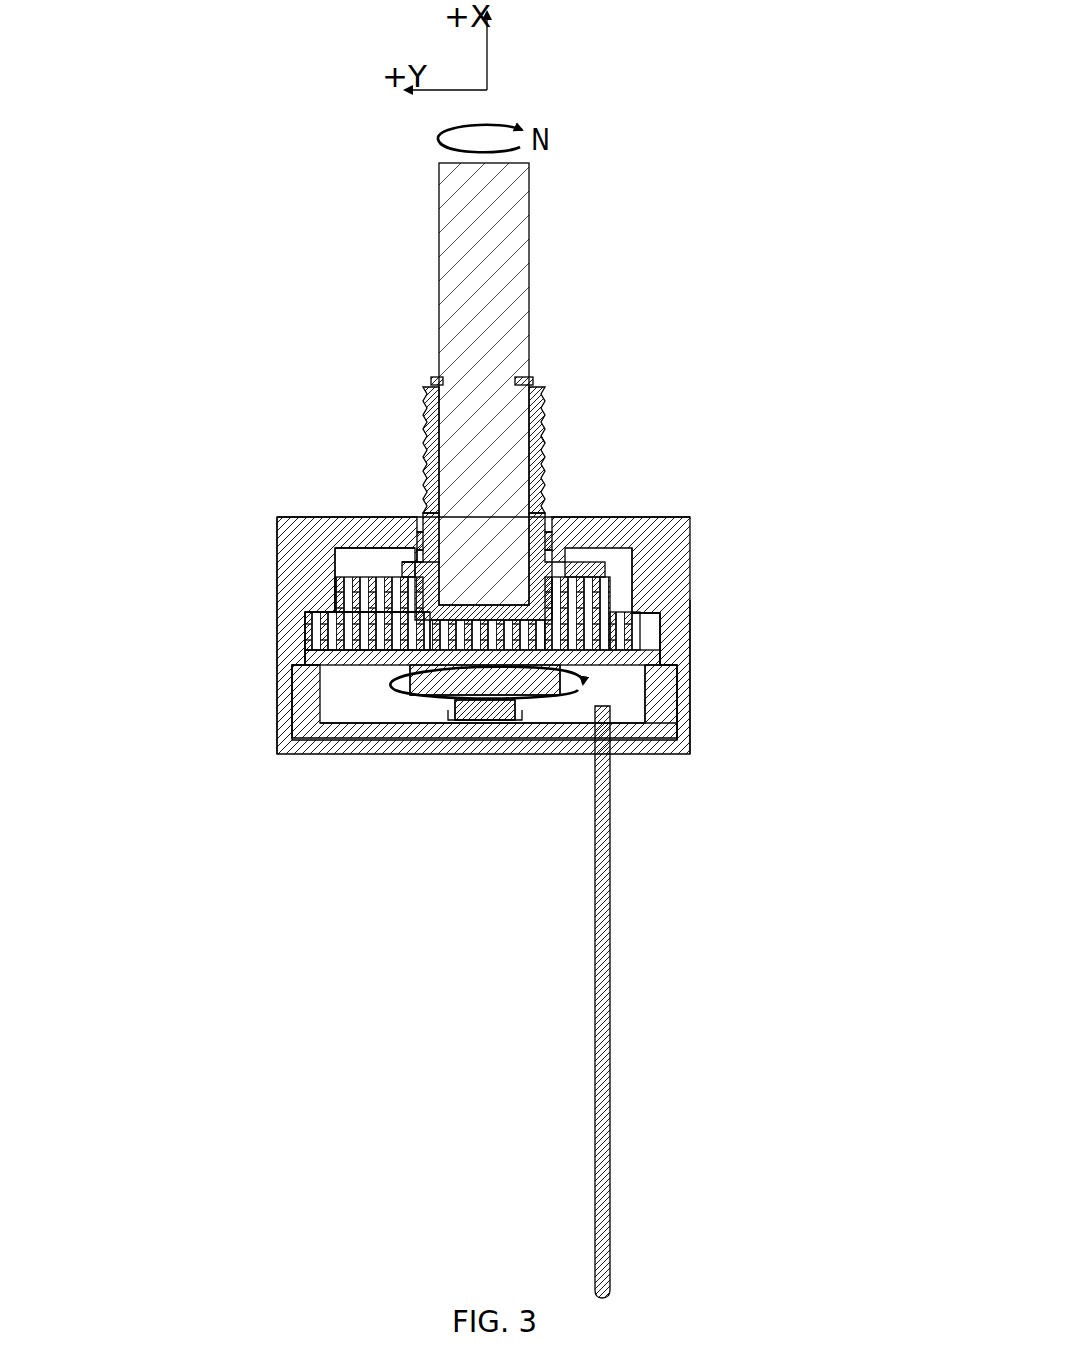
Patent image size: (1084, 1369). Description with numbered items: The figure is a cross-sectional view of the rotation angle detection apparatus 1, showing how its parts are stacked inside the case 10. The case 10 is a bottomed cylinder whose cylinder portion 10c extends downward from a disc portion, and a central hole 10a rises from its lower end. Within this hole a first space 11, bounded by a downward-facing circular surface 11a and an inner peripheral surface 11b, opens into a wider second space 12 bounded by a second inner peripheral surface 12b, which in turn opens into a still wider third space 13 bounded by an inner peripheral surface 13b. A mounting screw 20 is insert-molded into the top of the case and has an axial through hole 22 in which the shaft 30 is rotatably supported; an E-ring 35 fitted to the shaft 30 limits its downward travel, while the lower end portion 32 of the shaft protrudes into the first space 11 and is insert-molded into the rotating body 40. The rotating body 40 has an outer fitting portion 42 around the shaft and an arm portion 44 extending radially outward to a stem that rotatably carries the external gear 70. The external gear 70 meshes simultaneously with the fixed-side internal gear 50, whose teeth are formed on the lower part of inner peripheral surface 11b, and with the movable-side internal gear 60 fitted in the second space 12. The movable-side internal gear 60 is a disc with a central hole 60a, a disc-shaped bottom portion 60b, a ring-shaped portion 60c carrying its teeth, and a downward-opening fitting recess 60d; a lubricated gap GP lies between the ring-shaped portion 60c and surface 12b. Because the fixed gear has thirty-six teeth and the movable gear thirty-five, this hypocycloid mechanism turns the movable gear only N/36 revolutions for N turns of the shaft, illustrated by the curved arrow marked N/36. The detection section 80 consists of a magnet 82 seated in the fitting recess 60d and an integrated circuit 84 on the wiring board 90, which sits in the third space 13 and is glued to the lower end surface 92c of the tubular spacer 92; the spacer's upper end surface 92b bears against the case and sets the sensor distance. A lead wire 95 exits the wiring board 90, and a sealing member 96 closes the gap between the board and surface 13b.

The rotation angle detection apparatus 1 is at (590, 228).
The case 10 is at (310, 517).
The hole 10a is at (365, 548).
The cylinder portion 10c is at (692, 685).
The first space 11 is at (387, 560).
The circular surface 11a is at (342, 560).
The inner peripheral surface 11b is at (633, 580).
The second space 12 is at (655, 620).
The inner peripheral surface 12b is at (660, 632).
The third space 13 is at (682, 666).
The inner peripheral surface 13b is at (678, 710).
The mounting screw 20 is at (546, 415).
The through hole 22 is at (522, 450).
The shaft 30 is at (529, 280).
The lower end portion 32 is at (470, 590).
The E-ring 35 is at (533, 381).
The number of teeth of fixed-side internal gear 36 is at (575, 705).
The rotating body 40 is at (562, 612).
The outer fitting portion 42 is at (400, 580).
The arm portion 44 is at (590, 575).
The fixed-side internal gear 50 is at (630, 620).
The movable-side internal gear 60 is at (656, 642).
The hole 60a is at (330, 680).
The disc-shaped bottom portion 60b is at (370, 680).
The ring-shaped portion 60c is at (308, 630).
The fitting recess 60d is at (437, 700).
The external gear 70 is at (622, 640).
The detection section 80 is at (470, 718).
The magnet 82 is at (522, 698).
The integrated circuit 84 is at (492, 725).
The wiring board 90 is at (625, 740).
The spacer 92 is at (293, 705).
The upper end surface 92b is at (300, 666).
The lower end surface 92c is at (650, 720).
The lead wire 95 is at (611, 870).
The sealing member 96 is at (666, 740).
The gap GP is at (665, 645).